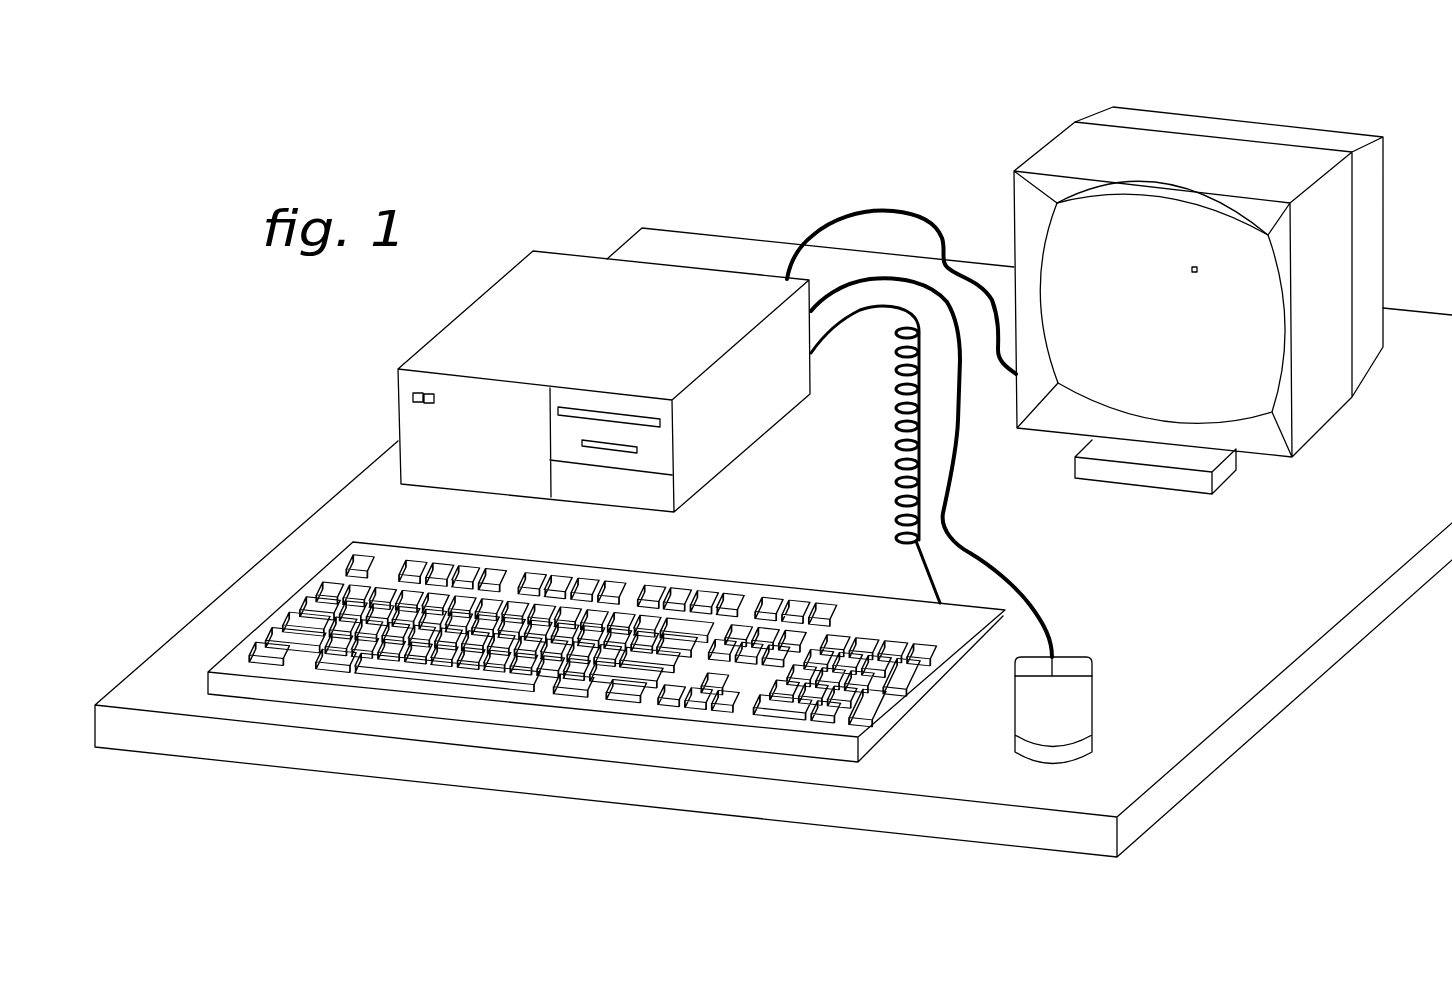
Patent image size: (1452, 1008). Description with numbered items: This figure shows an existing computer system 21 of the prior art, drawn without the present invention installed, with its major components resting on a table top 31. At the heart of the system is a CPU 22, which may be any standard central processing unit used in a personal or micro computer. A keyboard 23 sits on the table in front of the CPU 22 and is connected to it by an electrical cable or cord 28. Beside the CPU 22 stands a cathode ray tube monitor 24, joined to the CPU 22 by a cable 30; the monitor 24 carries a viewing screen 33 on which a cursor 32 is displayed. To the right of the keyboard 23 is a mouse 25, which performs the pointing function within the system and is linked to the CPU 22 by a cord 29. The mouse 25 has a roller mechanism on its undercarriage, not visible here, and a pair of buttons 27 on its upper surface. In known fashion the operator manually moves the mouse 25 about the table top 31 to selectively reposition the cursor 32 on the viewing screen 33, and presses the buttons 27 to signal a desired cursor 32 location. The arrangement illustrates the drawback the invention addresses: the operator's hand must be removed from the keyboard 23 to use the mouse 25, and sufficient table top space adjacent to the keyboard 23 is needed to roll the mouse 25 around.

The computer system 21 is at (821, 468).
The CPU 22 is at (557, 252).
The keyboard 23 is at (385, 700).
The cathode ray tube monitor 24 is at (1224, 287).
The mouse 25 is at (1067, 679).
The buttons 27 is at (1077, 650).
The electrical cable or cord 28 is at (893, 452).
The cord 29 is at (960, 463).
The cable 30 is at (900, 211).
The table top 31 is at (1270, 620).
The cursor 32 is at (1197, 272).
The viewing screen 33 is at (1218, 388).